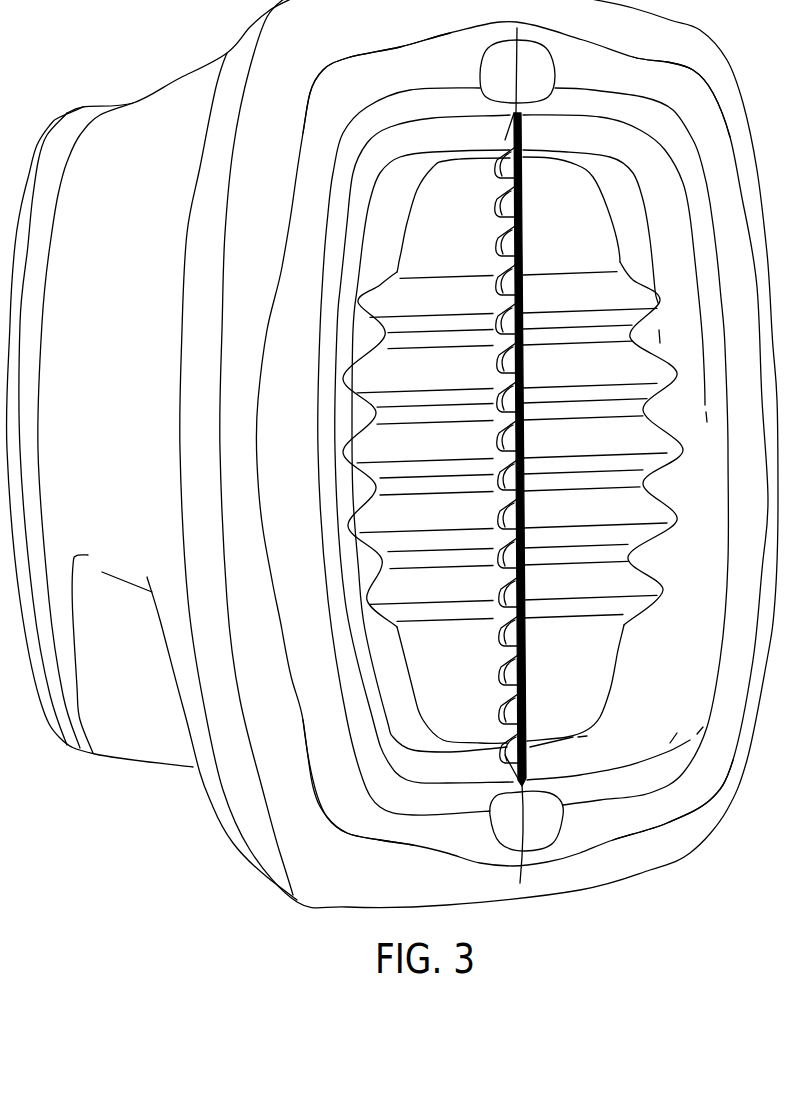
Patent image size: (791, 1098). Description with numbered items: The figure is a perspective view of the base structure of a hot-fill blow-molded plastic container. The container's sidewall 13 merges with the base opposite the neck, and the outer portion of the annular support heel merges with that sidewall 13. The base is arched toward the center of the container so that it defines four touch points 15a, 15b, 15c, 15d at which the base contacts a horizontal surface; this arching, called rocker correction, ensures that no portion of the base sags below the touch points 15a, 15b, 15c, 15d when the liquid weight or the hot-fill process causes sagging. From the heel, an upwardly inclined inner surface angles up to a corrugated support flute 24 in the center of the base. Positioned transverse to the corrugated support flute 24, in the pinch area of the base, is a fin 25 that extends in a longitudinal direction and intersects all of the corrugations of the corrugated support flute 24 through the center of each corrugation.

The sidewall 13 is at (172, 102).
The touch point 15a is at (662, 802).
The touch point 15b is at (658, 90).
The touch point 15c is at (358, 73).
The touch point 15d is at (355, 820).
The corrugated support flute 24 is at (641, 367).
The fin 25 is at (535, 569).